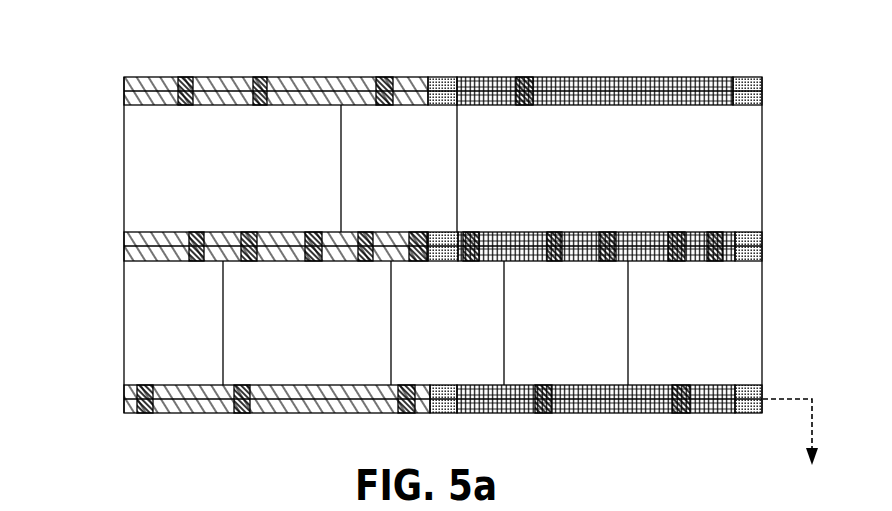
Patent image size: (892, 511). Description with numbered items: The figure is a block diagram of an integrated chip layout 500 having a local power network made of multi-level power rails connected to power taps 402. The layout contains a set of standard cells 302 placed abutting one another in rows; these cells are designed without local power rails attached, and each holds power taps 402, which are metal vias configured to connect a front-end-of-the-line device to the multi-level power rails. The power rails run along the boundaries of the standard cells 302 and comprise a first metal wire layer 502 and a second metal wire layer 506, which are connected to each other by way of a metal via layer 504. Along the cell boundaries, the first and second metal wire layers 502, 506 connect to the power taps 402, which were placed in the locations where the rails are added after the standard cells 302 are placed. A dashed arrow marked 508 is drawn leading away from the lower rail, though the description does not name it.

The integrated chip layout 500 is at (103, 28).
The first metal wire layer 502 is at (216, 75).
The metal via layer 504 is at (444, 75).
The second metal wire layer 506 is at (641, 75).
The power tap 402 is at (261, 108).
The standard cell 302 is at (250, 178).
The signal output direction 508 is at (788, 432).